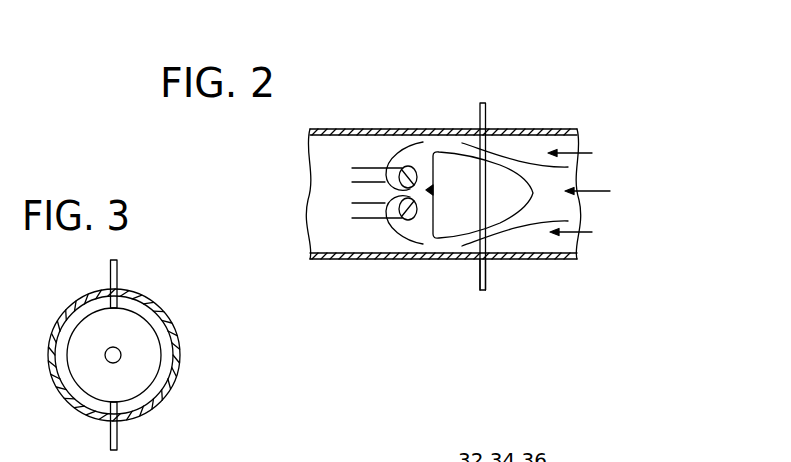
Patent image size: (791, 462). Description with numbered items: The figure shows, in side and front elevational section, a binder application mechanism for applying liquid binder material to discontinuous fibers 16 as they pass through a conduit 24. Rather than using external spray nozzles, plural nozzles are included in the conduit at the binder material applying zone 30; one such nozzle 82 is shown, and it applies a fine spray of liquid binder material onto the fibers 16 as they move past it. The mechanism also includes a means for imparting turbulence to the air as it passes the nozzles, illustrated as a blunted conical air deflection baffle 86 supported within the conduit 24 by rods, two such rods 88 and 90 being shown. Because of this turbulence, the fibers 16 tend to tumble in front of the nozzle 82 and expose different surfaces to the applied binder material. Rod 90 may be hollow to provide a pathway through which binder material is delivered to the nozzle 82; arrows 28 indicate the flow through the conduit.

In FIG. 2, the fibers 16 is at (395, 143).
In FIG. 2, the conduit 24 is at (522, 99).
In FIG. 2, the fluid flow direction 28 is at (586, 191).
In FIG. 2, the binder material applying zone 30 is at (546, 128).
In FIG. 3, the binder material applying zone 30 is at (173, 316).
In FIG. 2, the nozzle 82 is at (427, 192).
In FIG. 3, the nozzle 82 is at (122, 356).
In FIG. 2, the blunted conical air deflection baffle 86 is at (498, 205).
In FIG. 3, the blunted conical air deflection baffle 86 is at (132, 322).
In FIG. 2, the rod 88 is at (479, 263).
In FIG. 3, the rod 88 is at (110, 437).
In FIG. 2, the rod 90 is at (479, 108).
In FIG. 3, the rod 90 is at (109, 271).